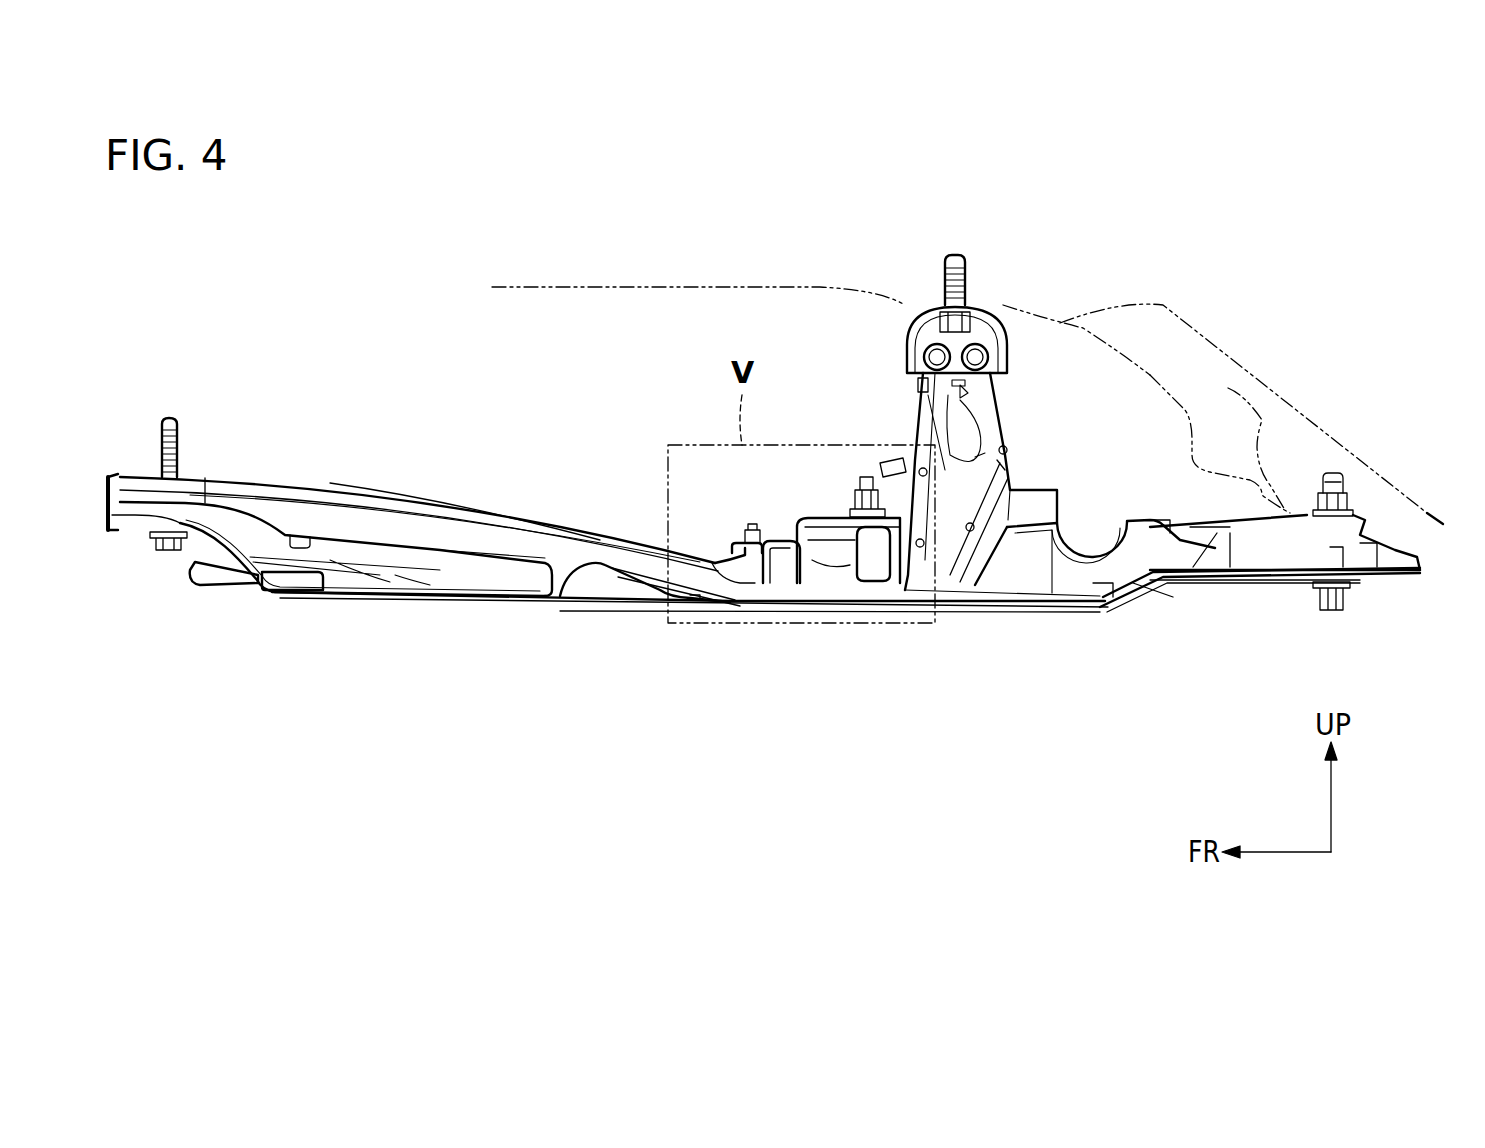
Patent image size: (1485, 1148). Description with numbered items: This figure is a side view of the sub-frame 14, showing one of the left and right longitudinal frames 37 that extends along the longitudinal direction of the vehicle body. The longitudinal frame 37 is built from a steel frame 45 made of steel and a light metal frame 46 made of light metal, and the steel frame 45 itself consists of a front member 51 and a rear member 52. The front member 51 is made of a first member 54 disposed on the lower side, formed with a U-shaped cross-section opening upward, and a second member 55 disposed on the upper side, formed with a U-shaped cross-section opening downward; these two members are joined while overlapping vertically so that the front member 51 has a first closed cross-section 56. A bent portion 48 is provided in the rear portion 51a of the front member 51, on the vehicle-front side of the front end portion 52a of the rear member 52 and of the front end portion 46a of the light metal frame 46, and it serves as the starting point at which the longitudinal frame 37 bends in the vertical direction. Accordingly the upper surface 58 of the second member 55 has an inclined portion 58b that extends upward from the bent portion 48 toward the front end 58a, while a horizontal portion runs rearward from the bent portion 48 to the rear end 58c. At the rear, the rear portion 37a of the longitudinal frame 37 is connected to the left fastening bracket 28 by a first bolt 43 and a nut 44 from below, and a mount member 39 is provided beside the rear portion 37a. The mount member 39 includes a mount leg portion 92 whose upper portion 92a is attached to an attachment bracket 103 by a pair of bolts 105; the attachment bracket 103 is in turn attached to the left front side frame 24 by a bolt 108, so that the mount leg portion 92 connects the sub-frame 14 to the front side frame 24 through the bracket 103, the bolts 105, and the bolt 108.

The sub-frame 14 is at (362, 458).
The left front side frame 24 is at (708, 283).
The left fastening bracket 28 is at (1248, 400).
The longitudinal frame 37 is at (1090, 782).
The rear portion 37a is at (143, 478).
The mount member 39 is at (1003, 404).
The first bolt 43 is at (1333, 615).
The nut 44 is at (1348, 505).
The steel frame 45 is at (1018, 728).
The light metal frame 46 is at (1068, 580).
The front end portion 46a is at (740, 545).
The bent portion 48 is at (712, 577).
The front member 51 is at (510, 673).
The rear portion 51a is at (757, 600).
The rear member 52 is at (1000, 605).
The front end portion 52a is at (745, 600).
The first member 54 is at (490, 585).
The second member 55 is at (370, 528).
The first closed cross-section 56 is at (313, 507).
The upper surface 58 is at (490, 520).
The front end 58a is at (205, 478).
The inclined portion 58b is at (430, 500).
The rear end 58c is at (765, 577).
The mount leg portion 92 is at (993, 435).
The upper portion 92a is at (930, 382).
The attachment bracket 103 is at (912, 330).
The bolts 105 is at (935, 357).
The bolt 108 is at (945, 280).